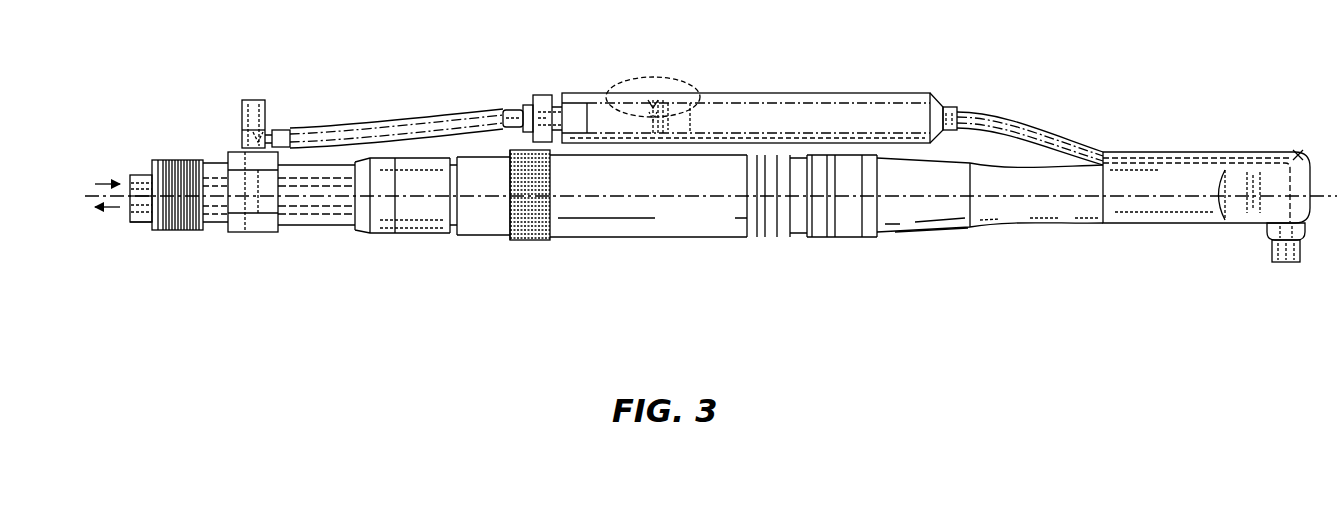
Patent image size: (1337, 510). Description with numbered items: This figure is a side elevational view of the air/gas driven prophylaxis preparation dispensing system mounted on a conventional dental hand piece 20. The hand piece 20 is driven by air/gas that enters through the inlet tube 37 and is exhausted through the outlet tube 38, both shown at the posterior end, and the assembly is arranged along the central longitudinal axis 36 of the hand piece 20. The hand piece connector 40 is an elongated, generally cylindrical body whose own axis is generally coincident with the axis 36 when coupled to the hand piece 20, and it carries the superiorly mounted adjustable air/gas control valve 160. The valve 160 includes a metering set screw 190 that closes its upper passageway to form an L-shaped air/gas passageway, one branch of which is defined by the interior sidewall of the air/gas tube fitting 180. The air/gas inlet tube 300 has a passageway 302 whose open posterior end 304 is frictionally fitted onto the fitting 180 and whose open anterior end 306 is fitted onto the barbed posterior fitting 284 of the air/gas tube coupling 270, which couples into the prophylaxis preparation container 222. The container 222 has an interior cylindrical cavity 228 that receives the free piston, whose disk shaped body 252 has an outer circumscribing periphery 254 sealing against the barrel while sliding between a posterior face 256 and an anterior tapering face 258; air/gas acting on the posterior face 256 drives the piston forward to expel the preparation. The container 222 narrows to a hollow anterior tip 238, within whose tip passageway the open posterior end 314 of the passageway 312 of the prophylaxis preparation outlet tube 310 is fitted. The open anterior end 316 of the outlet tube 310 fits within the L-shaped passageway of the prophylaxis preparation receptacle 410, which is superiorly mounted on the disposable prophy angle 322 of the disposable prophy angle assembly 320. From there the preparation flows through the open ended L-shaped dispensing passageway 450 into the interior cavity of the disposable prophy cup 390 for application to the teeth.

The dental hand piece 20 is at (704, 197).
The central longitudinal axis 36 is at (88, 172).
The inlet tube 37 is at (143, 174).
The outlet tube 38 is at (135, 226).
The hand piece connector 40 is at (317, 250).
The superiorly mounted adjustable air/gas control valve 160 is at (226, 96).
The air/gas tube fitting 180 is at (250, 80).
The metering set screw 190 is at (253, 100).
The prophylaxis preparation container 222 is at (746, 78).
The interior cylindrical cavity 228 is at (823, 114).
The hollow anterior tip 238 is at (940, 106).
The disk shaped body 252 is at (660, 98).
The outer circumscribing periphery 254 is at (652, 97).
The posterior face 256 is at (606, 96).
The anterior tapering face 258 is at (698, 100).
The air/gas tube coupling 270 is at (543, 88).
The barbed posterior fitting 284 is at (502, 106).
The air/gas inlet tube 300 is at (412, 118).
The passageway 302 is at (336, 128).
The open posterior end 304 is at (279, 128).
The open anterior end 306 is at (524, 100).
The prophylaxis preparation outlet tube 310 is at (1028, 124).
The passageway 312 is at (990, 113).
The open posterior end 314 is at (955, 107).
The open anterior end 316 is at (1167, 150).
The disposable prophy angle assembly 320 is at (1214, 179).
The disposable prophy angle 322 is at (1240, 212).
The disposable prophy cup 390 is at (1290, 263).
The prophylaxis preparation receptacle 410 is at (1203, 151).
The L-shaped dispensing passageway 450 is at (1299, 152).